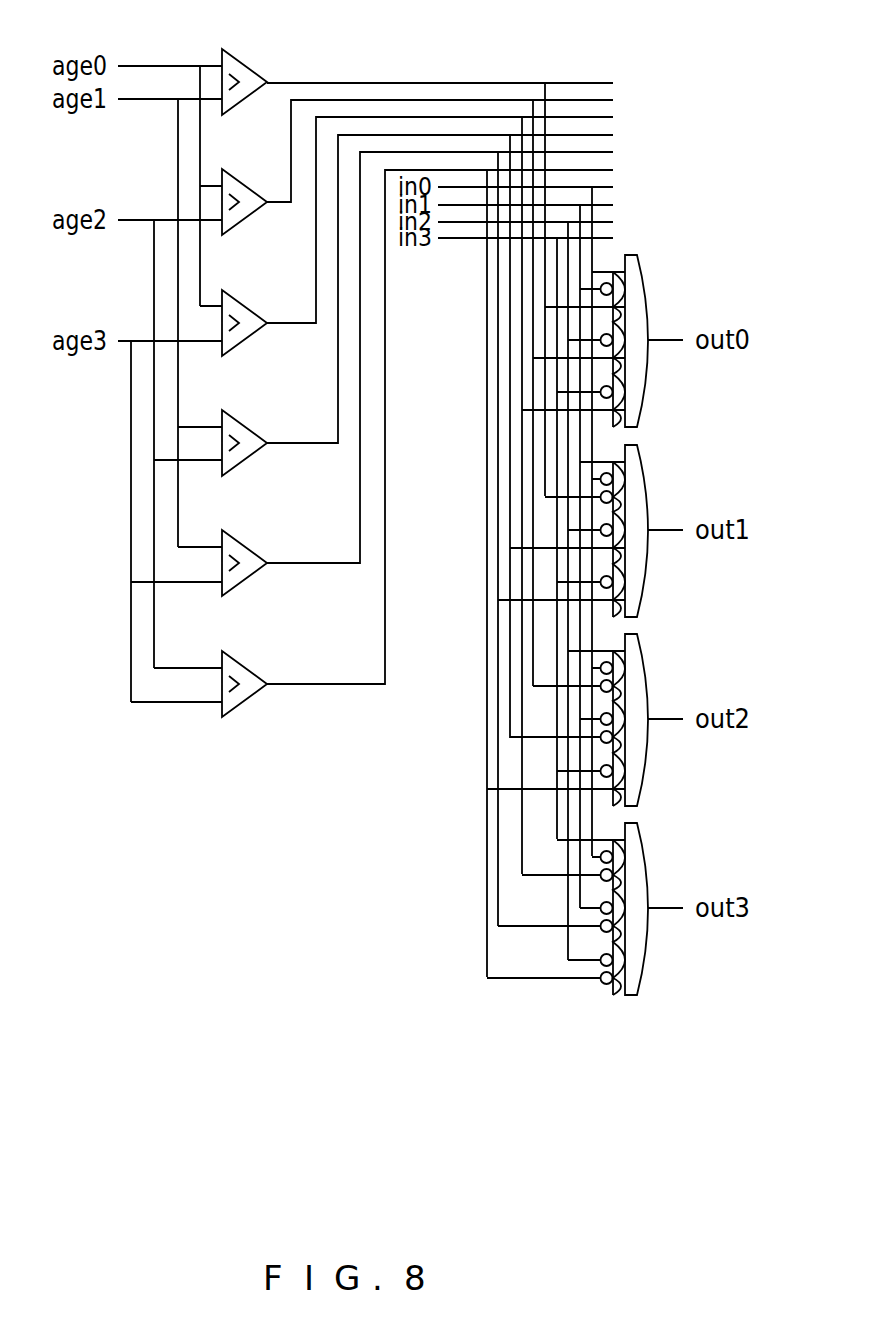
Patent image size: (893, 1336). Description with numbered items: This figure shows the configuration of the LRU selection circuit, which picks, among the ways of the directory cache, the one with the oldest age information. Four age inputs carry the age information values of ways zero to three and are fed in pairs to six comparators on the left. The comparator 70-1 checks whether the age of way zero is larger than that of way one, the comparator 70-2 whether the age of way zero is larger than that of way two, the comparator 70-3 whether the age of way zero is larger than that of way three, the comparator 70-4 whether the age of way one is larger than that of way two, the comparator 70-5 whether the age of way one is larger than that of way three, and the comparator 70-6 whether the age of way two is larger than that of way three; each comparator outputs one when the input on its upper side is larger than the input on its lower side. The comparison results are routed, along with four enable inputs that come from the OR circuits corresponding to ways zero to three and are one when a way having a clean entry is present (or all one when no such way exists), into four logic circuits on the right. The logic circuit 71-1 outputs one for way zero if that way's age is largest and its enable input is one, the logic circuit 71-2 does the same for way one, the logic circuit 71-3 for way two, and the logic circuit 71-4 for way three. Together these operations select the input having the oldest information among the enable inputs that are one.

The comparator 70-1 is at (240, 62).
The comparator 70-2 is at (267, 158).
The comparator 70-3 is at (240, 294).
The comparator 70-4 is at (240, 414).
The comparator 70-5 is at (240, 534).
The comparator 70-6 is at (240, 655).
The logic circuit 71-1 is at (602, 258).
The logic circuit 71-2 is at (602, 448).
The logic circuit 71-3 is at (602, 637).
The logic circuit 71-4 is at (602, 826).